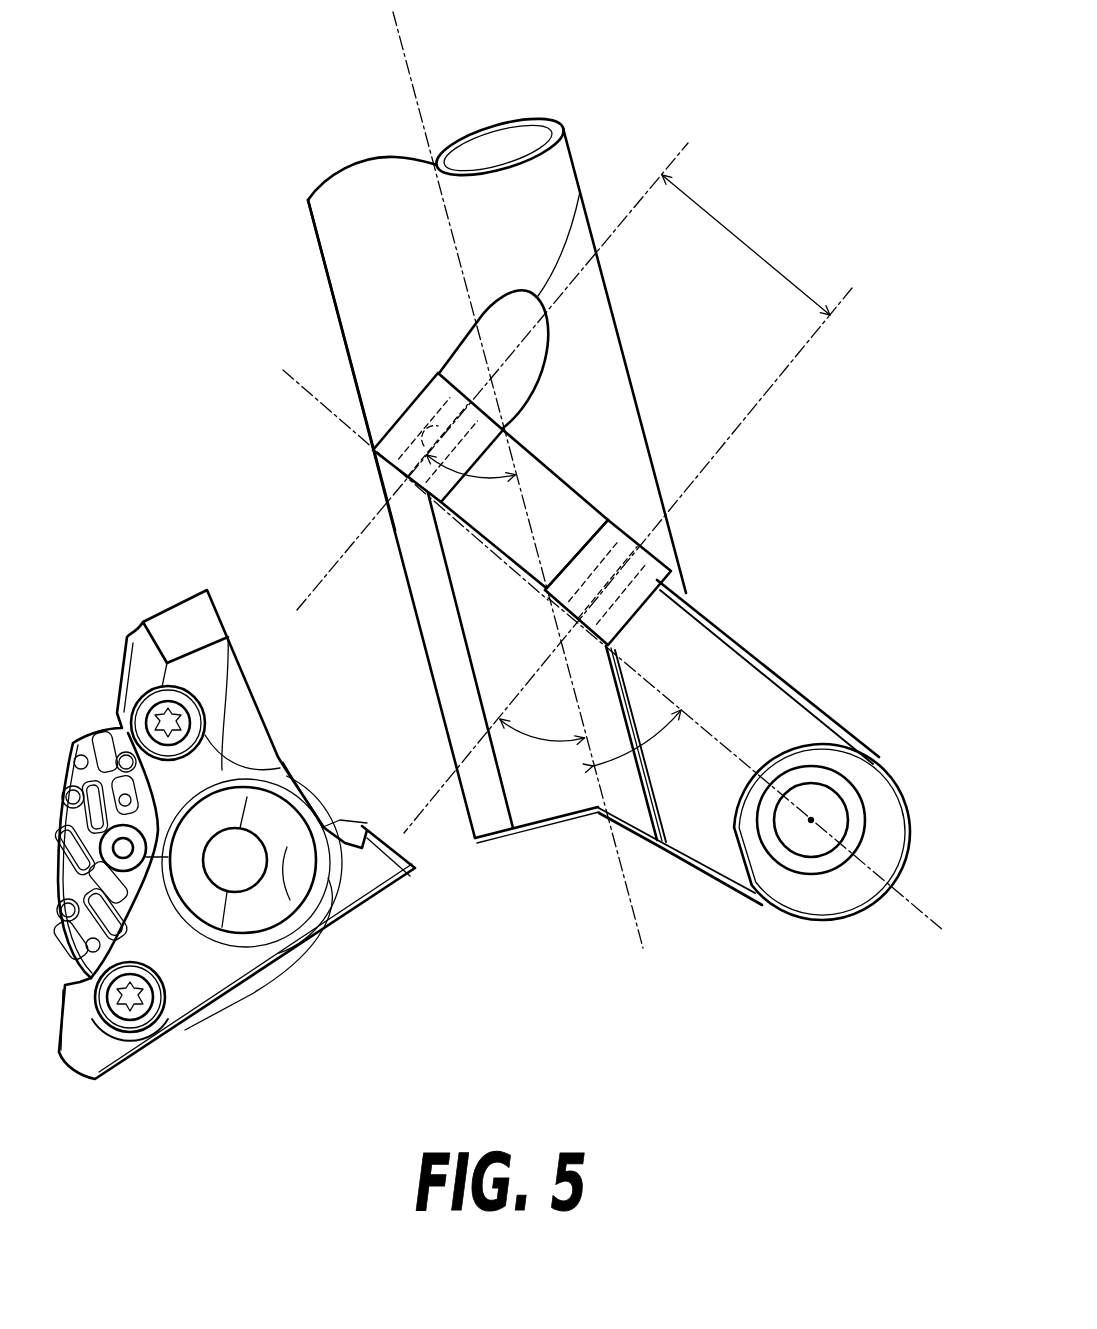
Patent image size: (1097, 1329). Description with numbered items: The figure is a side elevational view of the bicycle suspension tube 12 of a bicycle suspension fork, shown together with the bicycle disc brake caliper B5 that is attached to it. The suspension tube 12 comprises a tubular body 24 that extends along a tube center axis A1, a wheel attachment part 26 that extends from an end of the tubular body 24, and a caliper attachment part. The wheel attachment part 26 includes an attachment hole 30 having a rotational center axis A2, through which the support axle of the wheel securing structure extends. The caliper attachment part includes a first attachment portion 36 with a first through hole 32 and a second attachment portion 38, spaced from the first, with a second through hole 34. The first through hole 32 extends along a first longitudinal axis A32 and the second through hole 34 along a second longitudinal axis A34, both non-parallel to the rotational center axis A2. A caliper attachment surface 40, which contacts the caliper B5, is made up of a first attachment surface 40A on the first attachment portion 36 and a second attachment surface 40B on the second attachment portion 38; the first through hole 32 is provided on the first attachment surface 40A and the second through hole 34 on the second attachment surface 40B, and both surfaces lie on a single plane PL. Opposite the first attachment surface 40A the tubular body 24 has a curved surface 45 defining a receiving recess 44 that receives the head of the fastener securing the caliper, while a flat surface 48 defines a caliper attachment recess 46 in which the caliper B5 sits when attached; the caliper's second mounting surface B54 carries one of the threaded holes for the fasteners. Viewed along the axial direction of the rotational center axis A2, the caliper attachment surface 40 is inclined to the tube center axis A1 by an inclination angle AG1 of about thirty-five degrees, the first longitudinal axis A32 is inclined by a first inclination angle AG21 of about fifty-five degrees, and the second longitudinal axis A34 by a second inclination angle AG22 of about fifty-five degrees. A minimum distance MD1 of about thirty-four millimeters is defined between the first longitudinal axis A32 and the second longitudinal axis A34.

The bicycle suspension tube 12 is at (497, 431).
The tubular body 24 is at (557, 171).
The wheel attachment part 26 is at (742, 665).
The attachment hole 30 is at (817, 847).
The first through hole 32 is at (425, 430).
The second through hole 34 is at (630, 564).
The first attachment portion 36 is at (343, 336).
The second attachment portion 38 is at (608, 538).
The caliper attachment surface 40 is at (456, 629).
The first attachment surface 40A is at (437, 503).
The second attachment surface 40B is at (547, 610).
The receiving recess 44 is at (519, 386).
The curved surface 45 is at (580, 192).
The caliper attachment recess 46 is at (560, 778).
The flat surface 48 is at (540, 805).
The tube center axis A1 is at (410, 63).
The rotational center axis A2 is at (811, 820).
The first longitudinal axis A32 is at (357, 540).
The second longitudinal axis A34 is at (727, 438).
The single plane PL is at (298, 383).
The minimum distance MD1 is at (738, 238).
The inclination angle AG1 is at (663, 740).
The first inclination angle AG21 is at (514, 478).
The second inclination angle AG22 is at (533, 742).
The bicycle disc brake caliper B5 is at (120, 605).
The second mounting surface B54 is at (368, 842).